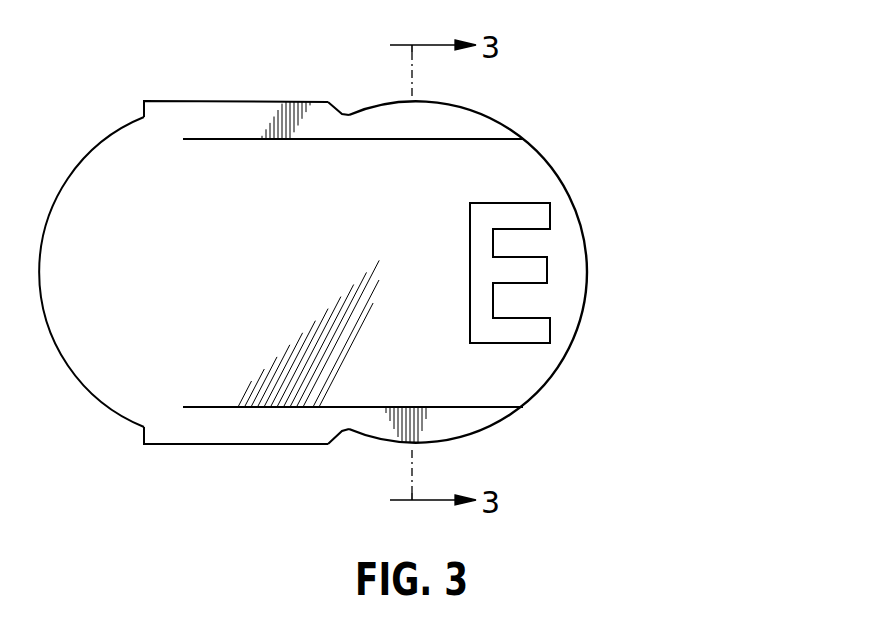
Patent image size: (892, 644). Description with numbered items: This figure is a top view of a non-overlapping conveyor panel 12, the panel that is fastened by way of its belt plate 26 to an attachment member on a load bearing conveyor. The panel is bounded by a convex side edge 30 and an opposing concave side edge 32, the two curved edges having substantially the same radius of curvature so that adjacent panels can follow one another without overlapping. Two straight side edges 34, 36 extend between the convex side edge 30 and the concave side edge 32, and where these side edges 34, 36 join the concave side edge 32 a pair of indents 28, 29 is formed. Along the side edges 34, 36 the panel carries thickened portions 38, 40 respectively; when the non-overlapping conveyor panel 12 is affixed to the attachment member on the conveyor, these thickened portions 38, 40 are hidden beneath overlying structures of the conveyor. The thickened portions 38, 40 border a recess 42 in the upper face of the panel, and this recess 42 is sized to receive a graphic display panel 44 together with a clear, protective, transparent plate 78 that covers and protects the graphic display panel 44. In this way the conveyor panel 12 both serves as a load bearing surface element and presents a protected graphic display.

The non-overlapping conveyor panel 12 is at (512, 123).
The belt plate 26 is at (553, 380).
The indent 28 is at (337, 108).
The indent 29 is at (343, 433).
The convex side edge 30 is at (231, 197).
The concave side edge 32 is at (586, 238).
The side edge 34 is at (188, 100).
The side edge 36 is at (200, 445).
The thickened portion 38 is at (237, 110).
The thickened portion 40 is at (250, 432).
The recess 42 is at (522, 203).
The graphic display panel 44 is at (237, 368).
The protective transparent plate 78 is at (270, 287).